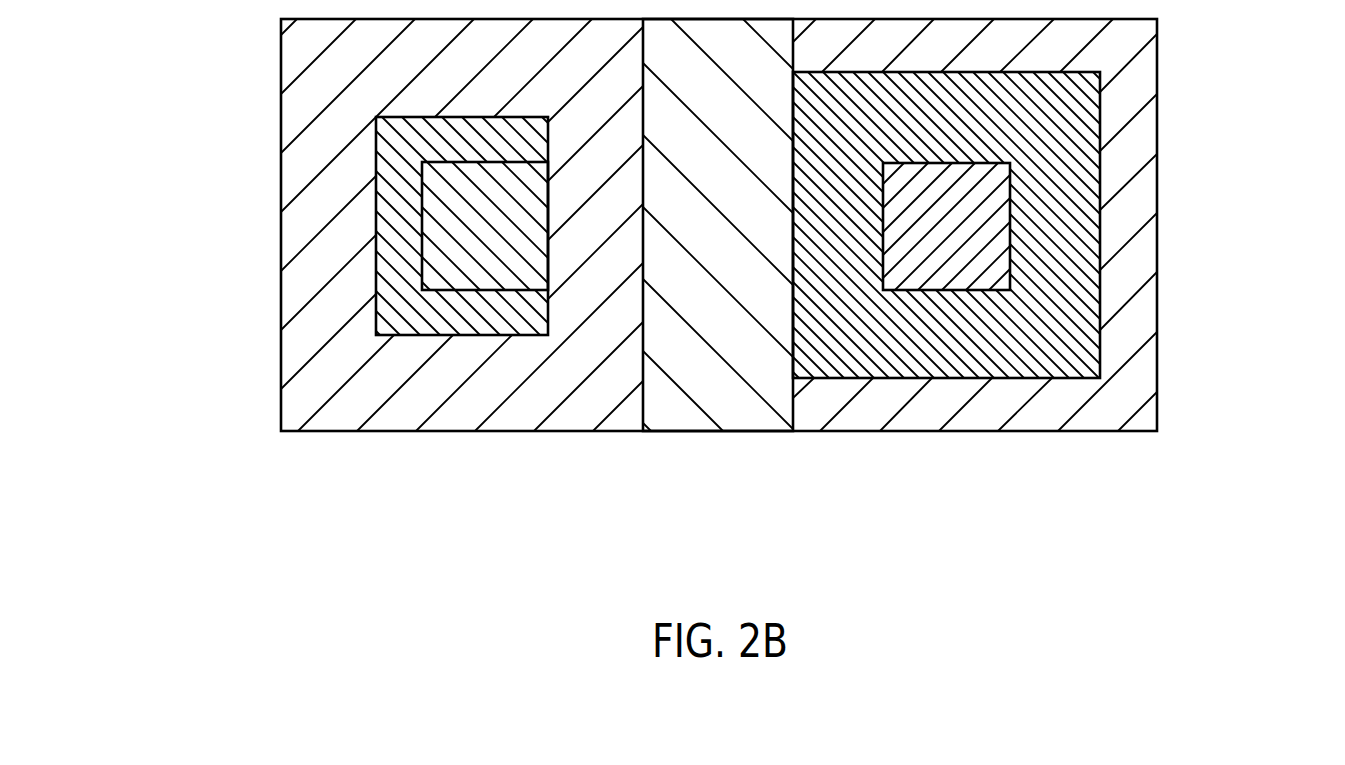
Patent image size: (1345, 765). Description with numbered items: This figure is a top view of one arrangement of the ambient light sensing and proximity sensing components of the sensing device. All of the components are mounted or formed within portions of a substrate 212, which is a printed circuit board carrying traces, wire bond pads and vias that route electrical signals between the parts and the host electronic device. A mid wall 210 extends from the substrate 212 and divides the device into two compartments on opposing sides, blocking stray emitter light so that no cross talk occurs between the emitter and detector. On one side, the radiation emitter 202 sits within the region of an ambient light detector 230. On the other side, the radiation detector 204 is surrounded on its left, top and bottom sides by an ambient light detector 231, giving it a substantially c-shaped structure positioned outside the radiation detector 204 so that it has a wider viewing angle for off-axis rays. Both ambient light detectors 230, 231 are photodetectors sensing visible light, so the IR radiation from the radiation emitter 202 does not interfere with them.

The radiation emitter 202 is at (1010, 270).
The radiation detector 204 is at (422, 225).
The mid wall 210 is at (717, 431).
The substrate 212 is at (1000, 431).
The ambient light detector 230 is at (1100, 132).
The ambient light detector 231 is at (376, 145).